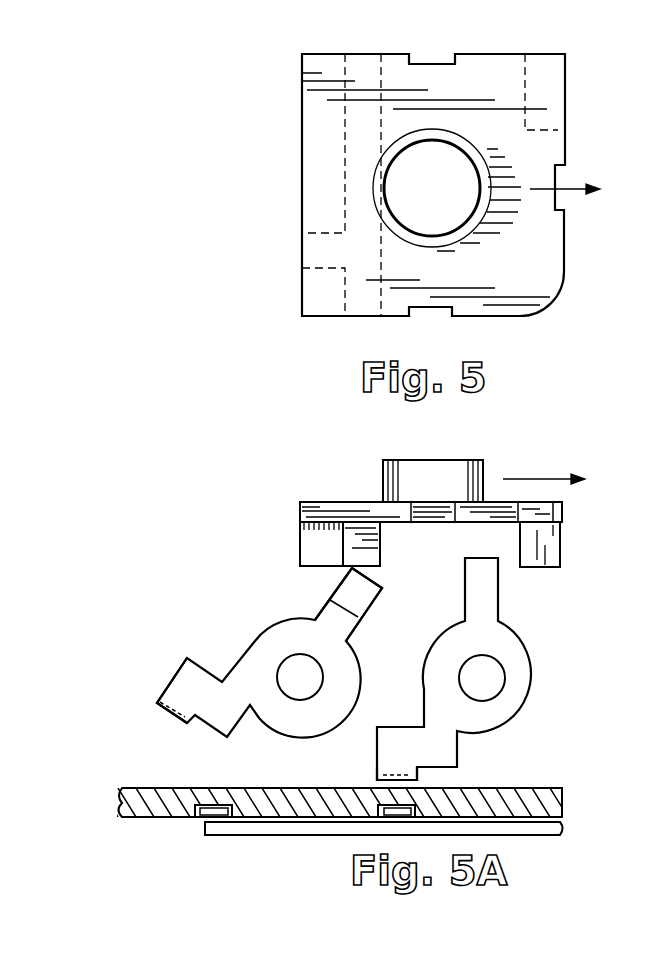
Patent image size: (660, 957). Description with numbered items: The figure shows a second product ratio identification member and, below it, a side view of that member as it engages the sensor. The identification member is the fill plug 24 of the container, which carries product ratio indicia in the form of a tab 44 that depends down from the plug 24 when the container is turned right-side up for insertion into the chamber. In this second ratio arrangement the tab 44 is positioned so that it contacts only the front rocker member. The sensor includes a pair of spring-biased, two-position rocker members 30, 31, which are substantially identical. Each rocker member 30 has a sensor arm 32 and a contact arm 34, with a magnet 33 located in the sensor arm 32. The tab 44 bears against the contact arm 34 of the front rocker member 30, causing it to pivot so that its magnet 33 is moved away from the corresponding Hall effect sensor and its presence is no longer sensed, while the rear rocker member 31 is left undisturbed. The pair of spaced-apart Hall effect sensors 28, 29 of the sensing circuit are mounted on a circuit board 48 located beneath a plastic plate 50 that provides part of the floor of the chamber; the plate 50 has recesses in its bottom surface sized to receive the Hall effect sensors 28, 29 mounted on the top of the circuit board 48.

In FIG. 5, the fill plug 24 is at (547, 150).
In FIG. 5A, the fill plug 24 is at (560, 513).
In FIG. 5, the tab 44 is at (358, 297).
In FIG. 5A, the tab 44 is at (366, 553).
In FIG. 5A, the rocker member 30 is at (271, 642).
In FIG. 5A, the rocker member 31 is at (512, 707).
In FIG. 5A, the sensor arm 32 is at (187, 688).
In FIG. 5A, the magnet 33 is at (165, 695).
In FIG. 5A, the contact arm 34 is at (348, 593).
In FIG. 5A, the Hall effect sensor 29 is at (383, 790).
In FIG. 5A, the plastic plate 50 is at (188, 795).
In FIG. 5A, the Hall effect sensor 28 is at (200, 817).
In FIG. 5A, the circuit board 48 is at (282, 828).